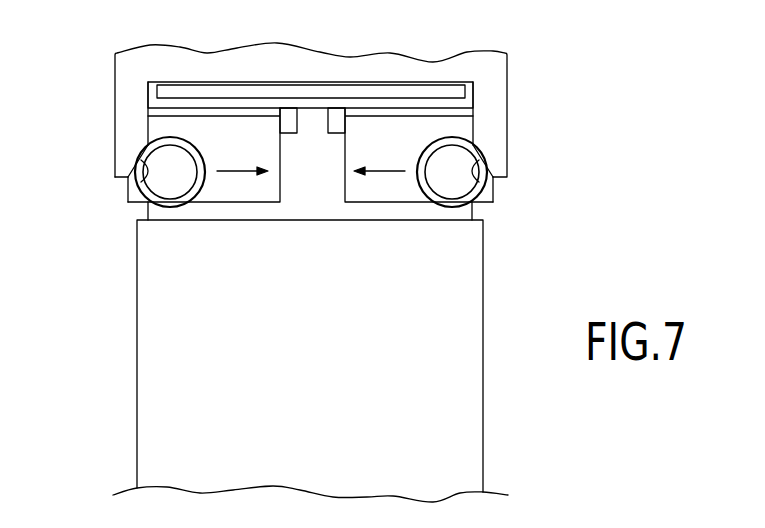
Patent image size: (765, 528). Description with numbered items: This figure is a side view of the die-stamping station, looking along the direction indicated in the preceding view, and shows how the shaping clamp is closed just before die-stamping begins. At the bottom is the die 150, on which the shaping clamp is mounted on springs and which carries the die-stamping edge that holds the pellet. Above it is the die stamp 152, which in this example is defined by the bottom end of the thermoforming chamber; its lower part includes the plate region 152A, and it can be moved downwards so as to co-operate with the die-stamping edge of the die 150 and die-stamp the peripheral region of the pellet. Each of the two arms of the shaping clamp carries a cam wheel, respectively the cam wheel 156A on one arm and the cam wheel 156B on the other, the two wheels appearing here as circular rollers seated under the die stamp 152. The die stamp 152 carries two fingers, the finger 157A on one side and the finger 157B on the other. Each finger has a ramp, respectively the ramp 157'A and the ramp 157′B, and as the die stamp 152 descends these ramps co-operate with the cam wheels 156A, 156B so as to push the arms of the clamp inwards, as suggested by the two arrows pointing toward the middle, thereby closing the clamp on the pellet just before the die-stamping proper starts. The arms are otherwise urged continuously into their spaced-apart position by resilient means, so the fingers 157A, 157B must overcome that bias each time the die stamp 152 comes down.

The die 150 is at (447, 445).
The die stamp 152 is at (473, 60).
The top plate of housing 152A is at (273, 92).
The cam wheel 156A is at (165, 172).
The cam wheel 156B is at (450, 185).
The finger 157A is at (129, 142).
The finger 157B is at (487, 148).
The ramp 157'A is at (89, 200).
The ramp 157′B is at (490, 190).